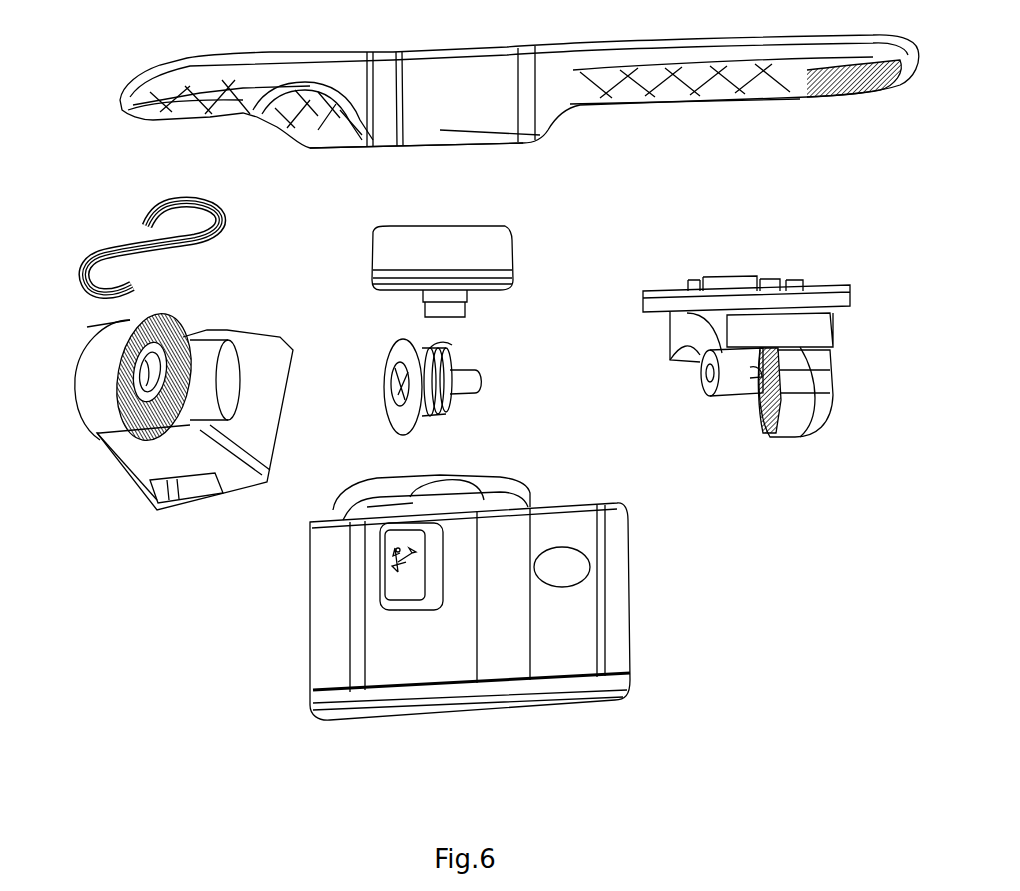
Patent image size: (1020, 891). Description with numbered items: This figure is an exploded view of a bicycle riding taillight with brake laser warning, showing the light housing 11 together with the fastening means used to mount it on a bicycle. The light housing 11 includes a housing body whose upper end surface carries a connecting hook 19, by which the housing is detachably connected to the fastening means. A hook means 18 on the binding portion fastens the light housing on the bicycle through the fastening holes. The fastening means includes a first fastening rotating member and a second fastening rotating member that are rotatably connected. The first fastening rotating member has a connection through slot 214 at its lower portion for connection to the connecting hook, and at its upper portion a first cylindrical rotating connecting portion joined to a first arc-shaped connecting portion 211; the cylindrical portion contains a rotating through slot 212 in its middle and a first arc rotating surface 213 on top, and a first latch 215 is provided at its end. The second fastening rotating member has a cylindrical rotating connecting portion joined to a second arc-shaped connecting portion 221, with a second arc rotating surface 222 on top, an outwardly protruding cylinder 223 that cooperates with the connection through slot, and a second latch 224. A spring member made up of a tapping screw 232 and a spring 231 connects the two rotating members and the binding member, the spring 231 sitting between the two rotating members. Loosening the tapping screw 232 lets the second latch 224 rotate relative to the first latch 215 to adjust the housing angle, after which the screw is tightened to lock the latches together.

The light housing 11 is at (385, 634).
The hook means 18 is at (113, 237).
The connecting hook 19 is at (470, 475).
The first arc-shaped connecting portion 211 is at (203, 403).
The rotating through slot 212 is at (137, 383).
The first arc rotating surface 213 is at (93, 360).
The connection through slot 214 is at (187, 485).
The first latch 215 is at (163, 333).
The second arc-shaped connecting portion 221 is at (693, 340).
The second arc rotating surface 222 is at (797, 420).
The protruding cylinder 223 is at (727, 373).
The second latch 224 is at (740, 435).
The spring 231 is at (447, 360).
The tapping screw 232 is at (400, 387).